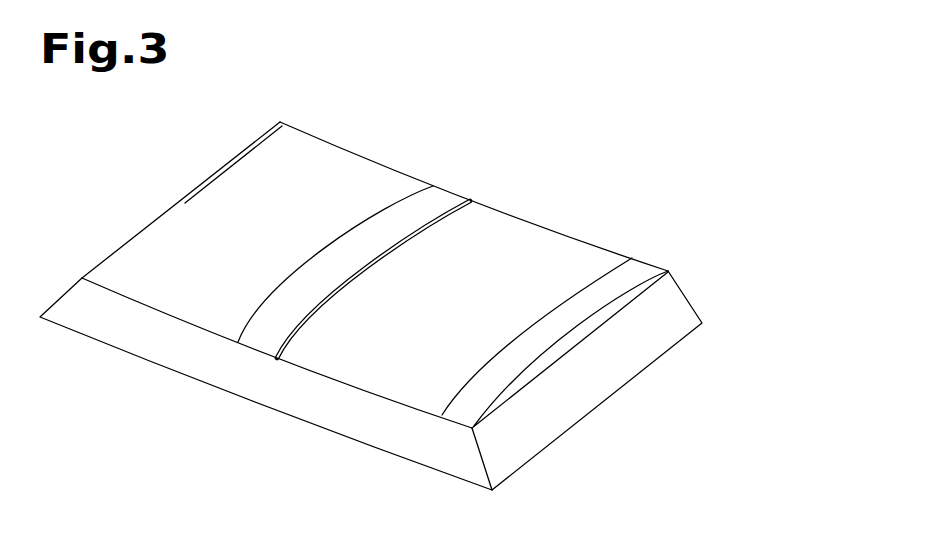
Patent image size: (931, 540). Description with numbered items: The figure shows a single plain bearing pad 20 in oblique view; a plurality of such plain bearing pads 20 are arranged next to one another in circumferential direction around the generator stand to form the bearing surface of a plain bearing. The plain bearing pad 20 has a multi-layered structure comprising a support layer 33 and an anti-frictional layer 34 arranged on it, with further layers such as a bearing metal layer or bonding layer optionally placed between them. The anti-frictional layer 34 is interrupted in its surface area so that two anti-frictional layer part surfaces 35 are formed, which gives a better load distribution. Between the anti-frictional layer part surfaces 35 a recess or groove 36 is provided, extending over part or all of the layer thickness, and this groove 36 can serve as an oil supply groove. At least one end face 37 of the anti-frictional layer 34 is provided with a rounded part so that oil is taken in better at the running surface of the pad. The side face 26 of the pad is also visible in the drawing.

The plain bearing pad 20 is at (680, 263).
The front side face 26 is at (580, 421).
The support layer 33 is at (677, 343).
The anti-frictional layer 34 is at (347, 183).
The anti-frictional layer part surface 35 is at (220, 203).
The recess 36 is at (248, 344).
The end face 37 is at (520, 393).